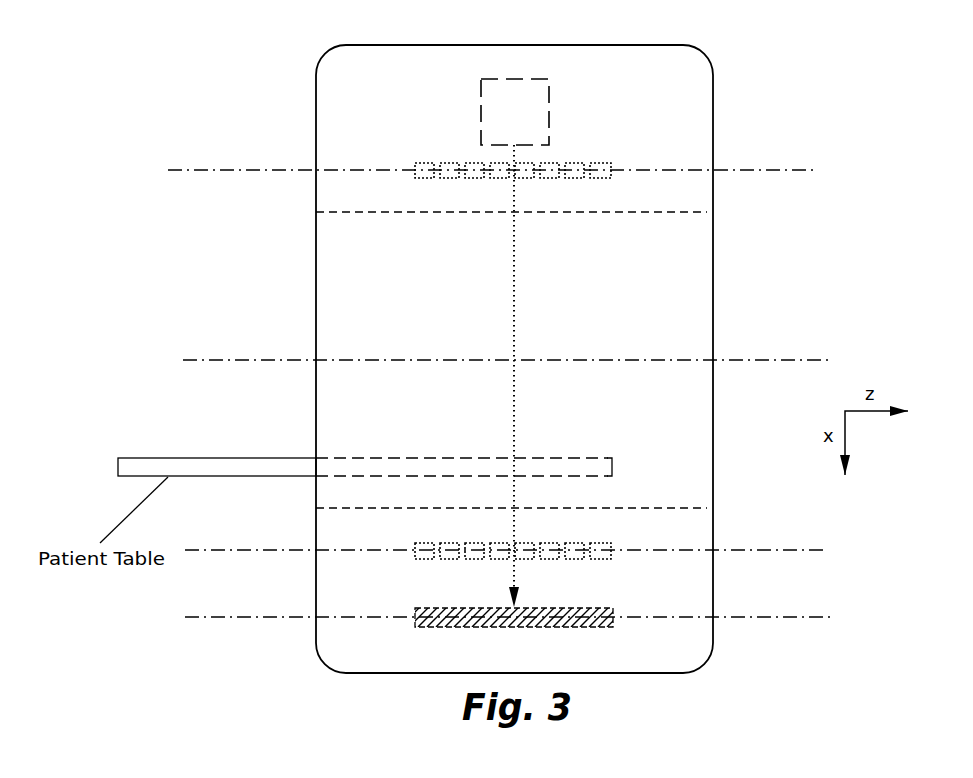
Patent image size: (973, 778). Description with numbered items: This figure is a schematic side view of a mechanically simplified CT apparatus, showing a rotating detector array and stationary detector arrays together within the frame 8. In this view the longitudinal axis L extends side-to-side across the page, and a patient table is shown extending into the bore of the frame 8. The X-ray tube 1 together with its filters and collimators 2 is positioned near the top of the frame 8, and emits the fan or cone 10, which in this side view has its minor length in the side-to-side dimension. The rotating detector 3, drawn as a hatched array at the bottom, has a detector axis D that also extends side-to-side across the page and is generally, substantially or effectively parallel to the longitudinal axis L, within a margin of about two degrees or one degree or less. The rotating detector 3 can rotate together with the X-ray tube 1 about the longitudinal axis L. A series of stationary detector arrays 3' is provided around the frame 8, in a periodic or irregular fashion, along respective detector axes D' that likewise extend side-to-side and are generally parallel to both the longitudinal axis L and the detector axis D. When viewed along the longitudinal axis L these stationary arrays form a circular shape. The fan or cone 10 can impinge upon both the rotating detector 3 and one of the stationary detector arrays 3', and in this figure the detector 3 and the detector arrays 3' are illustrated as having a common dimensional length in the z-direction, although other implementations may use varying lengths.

The X-ray tube 1 is at (656, 106).
The filters and collimators 2 is at (547, 112).
The detector 3 is at (593, 591).
The stationary detector arrays 3' is at (602, 337).
The frame 8 is at (316, 128).
The fan or cone 10 is at (514, 295).
The longitudinal axis L is at (830, 360).
The detector axis D is at (561, 590).
The detector axes D' is at (553, 334).